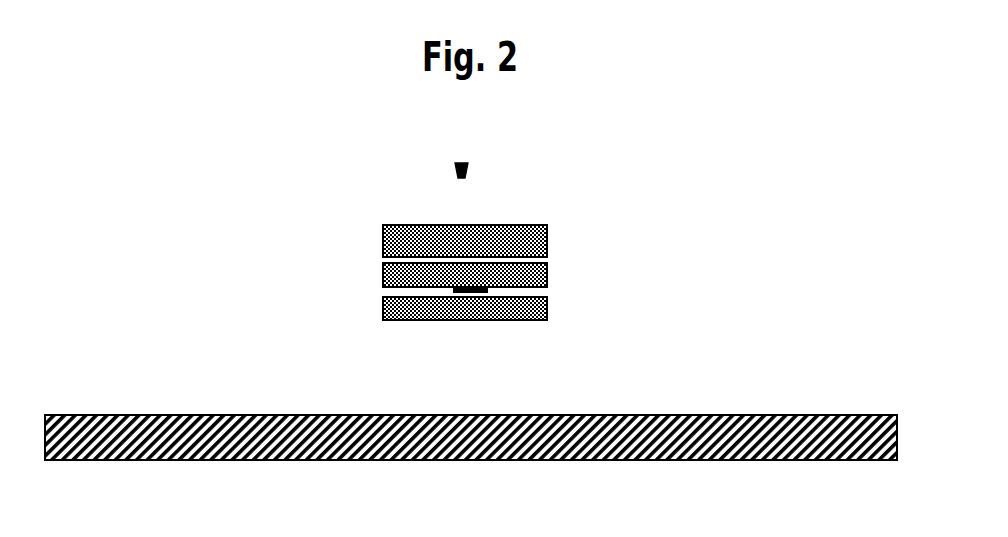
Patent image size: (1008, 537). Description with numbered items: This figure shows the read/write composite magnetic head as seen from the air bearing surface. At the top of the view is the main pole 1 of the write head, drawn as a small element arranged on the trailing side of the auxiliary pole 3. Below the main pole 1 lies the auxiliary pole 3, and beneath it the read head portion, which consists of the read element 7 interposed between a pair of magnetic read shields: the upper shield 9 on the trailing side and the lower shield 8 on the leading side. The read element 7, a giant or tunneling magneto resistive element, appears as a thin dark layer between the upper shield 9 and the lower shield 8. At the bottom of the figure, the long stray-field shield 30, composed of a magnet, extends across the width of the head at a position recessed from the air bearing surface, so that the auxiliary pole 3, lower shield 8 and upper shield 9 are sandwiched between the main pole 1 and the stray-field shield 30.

The main pole 1 is at (462, 162).
The auxiliary pole 3 is at (547, 228).
The read element 7 is at (453, 290).
The lower shield 8 is at (547, 305).
The upper shield 9 is at (547, 268).
The stray-field shield 30 is at (662, 417).